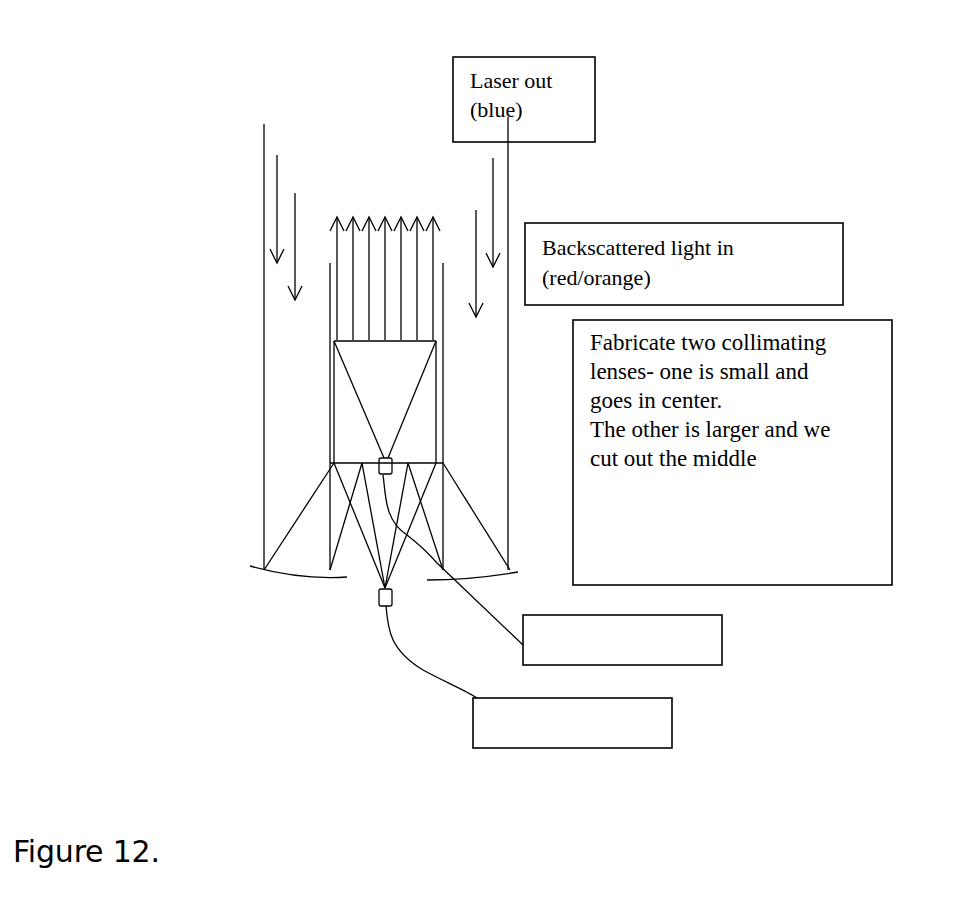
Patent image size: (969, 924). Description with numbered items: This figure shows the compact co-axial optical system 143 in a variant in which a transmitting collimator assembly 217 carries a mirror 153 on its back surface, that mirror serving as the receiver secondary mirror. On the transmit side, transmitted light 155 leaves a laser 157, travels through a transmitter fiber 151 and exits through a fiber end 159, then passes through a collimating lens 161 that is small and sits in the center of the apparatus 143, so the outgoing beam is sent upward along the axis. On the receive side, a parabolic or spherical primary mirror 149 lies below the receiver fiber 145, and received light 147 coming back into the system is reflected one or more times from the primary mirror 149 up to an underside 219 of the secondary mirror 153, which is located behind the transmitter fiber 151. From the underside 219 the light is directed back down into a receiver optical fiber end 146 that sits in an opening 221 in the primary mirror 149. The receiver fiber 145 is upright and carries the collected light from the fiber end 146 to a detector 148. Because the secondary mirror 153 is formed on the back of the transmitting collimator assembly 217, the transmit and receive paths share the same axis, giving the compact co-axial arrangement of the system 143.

The embodiment 143 is at (395, 823).
The receiver fiber 145 is at (428, 675).
The fiber end 146 is at (377, 597).
The received light 147 is at (264, 280).
The detector 148 is at (643, 748).
The primary mirror 149 is at (282, 575).
The transmitter fiber 151 is at (493, 610).
The secondary mirror 153 is at (334, 463).
The transmitted light 155 is at (433, 246).
The laser 157 is at (723, 648).
The fiber end 159 is at (392, 462).
The collimating lens 161 is at (330, 340).
The transmitting collimator assembly 217 is at (332, 402).
The underside 219 is at (365, 476).
The opening 221 is at (357, 577).